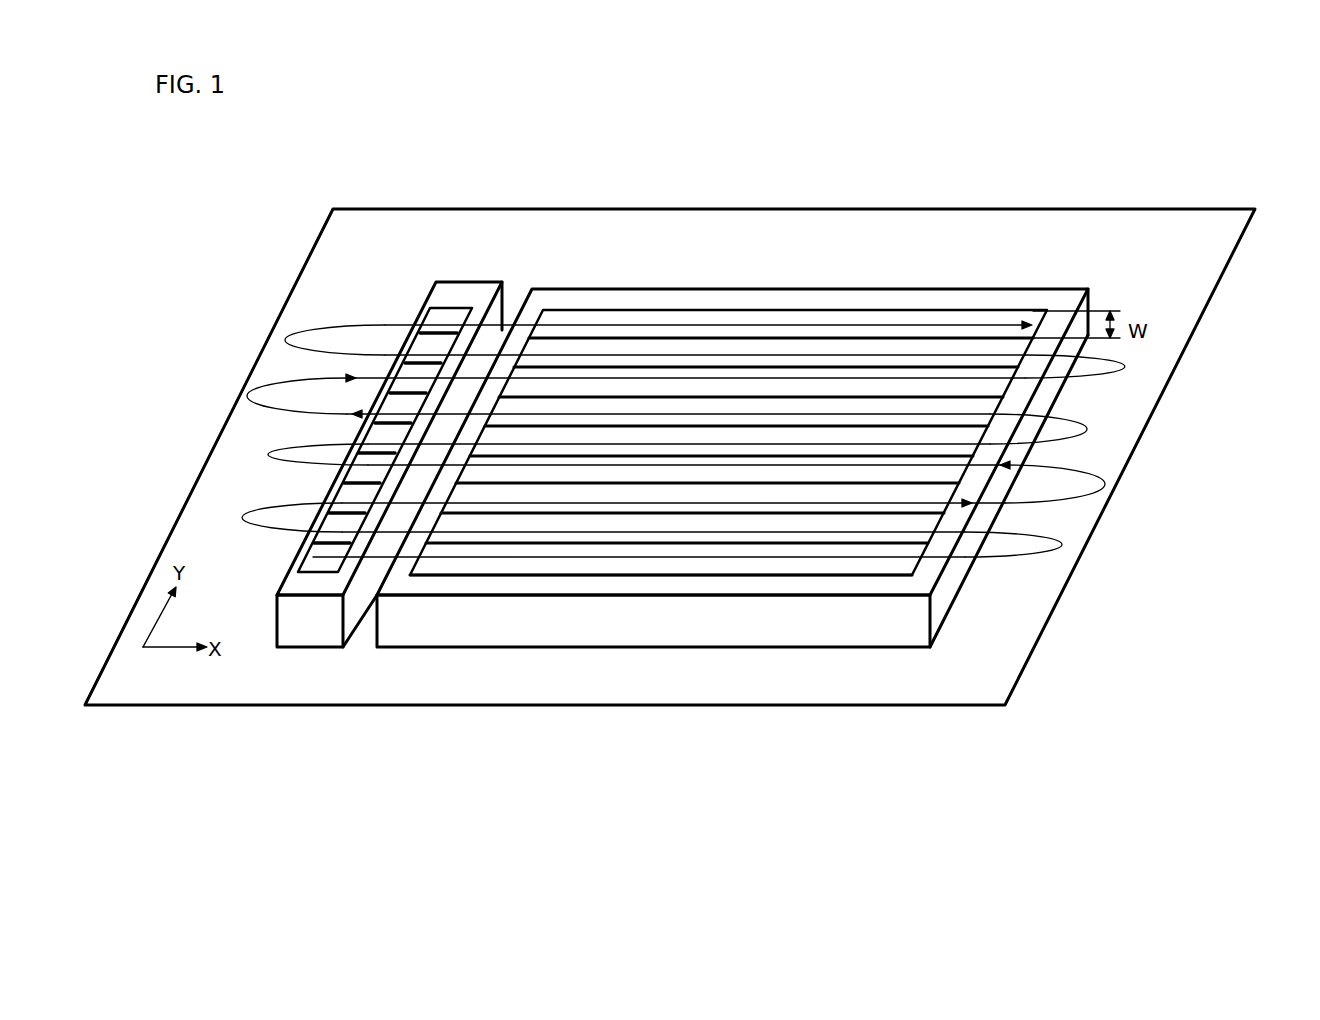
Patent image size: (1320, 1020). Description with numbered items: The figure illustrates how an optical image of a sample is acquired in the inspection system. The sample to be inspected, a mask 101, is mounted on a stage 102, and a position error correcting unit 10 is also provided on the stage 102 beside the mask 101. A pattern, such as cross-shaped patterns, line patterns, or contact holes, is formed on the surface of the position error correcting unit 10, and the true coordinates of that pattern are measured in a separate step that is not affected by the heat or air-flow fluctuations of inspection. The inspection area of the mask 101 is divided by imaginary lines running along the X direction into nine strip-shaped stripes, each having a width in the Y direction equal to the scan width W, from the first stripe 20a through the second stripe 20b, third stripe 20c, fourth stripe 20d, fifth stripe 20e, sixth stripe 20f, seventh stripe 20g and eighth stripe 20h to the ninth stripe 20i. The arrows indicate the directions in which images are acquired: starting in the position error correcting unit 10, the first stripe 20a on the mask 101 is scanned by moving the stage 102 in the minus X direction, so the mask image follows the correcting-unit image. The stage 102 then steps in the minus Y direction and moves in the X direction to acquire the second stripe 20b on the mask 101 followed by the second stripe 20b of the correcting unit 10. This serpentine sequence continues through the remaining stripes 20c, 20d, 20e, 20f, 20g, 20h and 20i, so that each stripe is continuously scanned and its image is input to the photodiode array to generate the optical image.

The position error correcting unit 10 is at (490, 282).
The mask 101 is at (725, 290).
The stage 102 is at (1211, 248).
The first stripe 20a is at (305, 568).
The second stripe 20b is at (325, 546).
The third stripe 20c is at (355, 502).
The fourth stripe 20d is at (365, 476).
The fifth stripe 20e is at (385, 431).
The sixth stripe 20f is at (410, 404).
The seventh stripe 20g is at (410, 368).
The eighth stripe 20h is at (432, 340).
The ninth stripe 20i is at (440, 313).